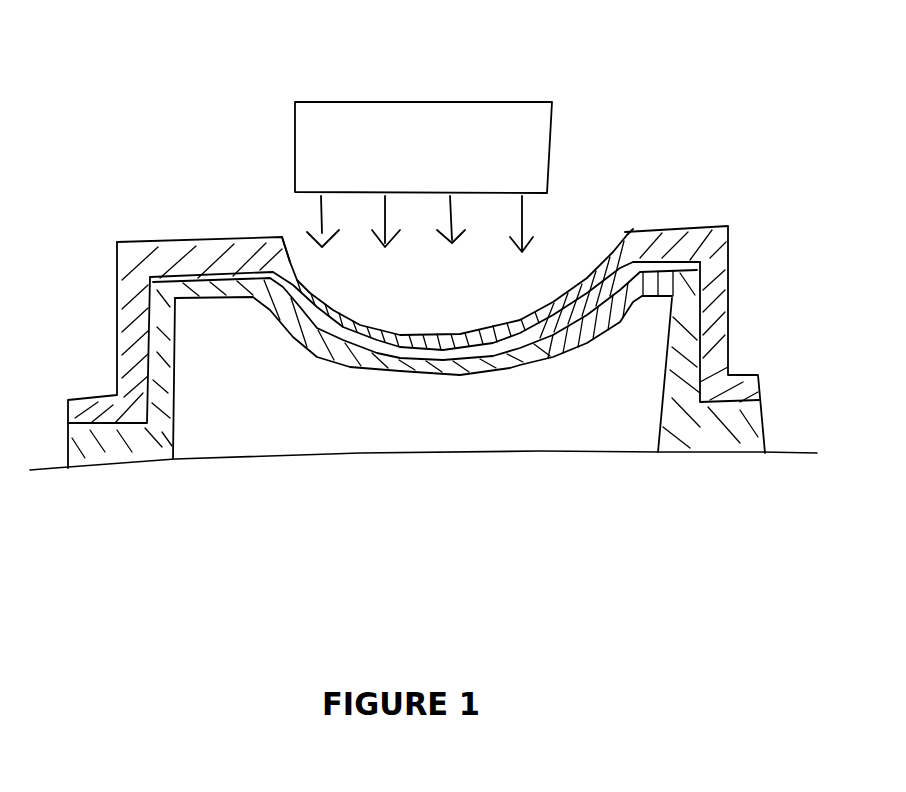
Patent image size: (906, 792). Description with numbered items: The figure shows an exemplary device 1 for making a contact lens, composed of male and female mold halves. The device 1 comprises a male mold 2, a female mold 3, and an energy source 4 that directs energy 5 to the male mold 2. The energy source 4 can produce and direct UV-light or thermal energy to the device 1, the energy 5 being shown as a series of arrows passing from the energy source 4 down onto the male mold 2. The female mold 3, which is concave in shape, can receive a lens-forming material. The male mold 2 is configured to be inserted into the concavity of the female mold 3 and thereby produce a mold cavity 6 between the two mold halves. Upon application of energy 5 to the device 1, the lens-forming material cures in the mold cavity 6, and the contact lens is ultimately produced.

The device 1 is at (635, 137).
The male mold 2 is at (733, 227).
The female mold 3 is at (475, 375).
The energy source 4 is at (340, 122).
The energy 5 is at (213, 224).
The mold cavity 6 is at (568, 331).